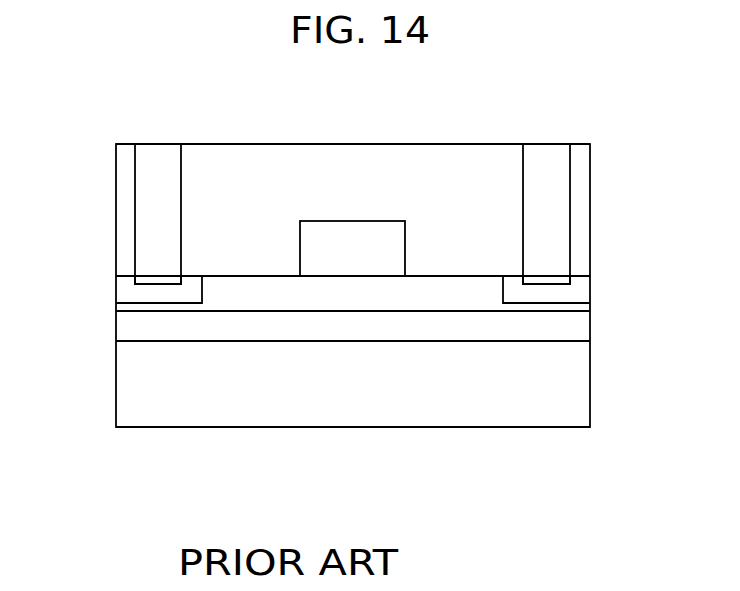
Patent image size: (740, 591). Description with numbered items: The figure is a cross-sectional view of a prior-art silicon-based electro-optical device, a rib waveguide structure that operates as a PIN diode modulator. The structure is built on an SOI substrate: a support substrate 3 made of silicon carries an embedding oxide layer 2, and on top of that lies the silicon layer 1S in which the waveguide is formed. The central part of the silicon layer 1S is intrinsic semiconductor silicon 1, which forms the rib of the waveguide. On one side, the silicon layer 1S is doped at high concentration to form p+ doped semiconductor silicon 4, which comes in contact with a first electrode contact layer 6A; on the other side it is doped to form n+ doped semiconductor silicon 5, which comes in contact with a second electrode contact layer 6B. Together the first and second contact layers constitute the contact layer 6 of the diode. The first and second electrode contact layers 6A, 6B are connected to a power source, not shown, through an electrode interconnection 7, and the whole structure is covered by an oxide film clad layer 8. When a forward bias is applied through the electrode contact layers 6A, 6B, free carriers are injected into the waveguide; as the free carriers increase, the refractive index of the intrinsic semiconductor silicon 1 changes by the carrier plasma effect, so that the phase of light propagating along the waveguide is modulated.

The intrinsic semiconductor silicon 1 is at (330, 265).
The silicon layer 1S is at (480, 297).
The embedding oxide layer 2 is at (565, 323).
The support substrate 3 is at (420, 405).
The p+ doped semiconductor silicon 4 is at (137, 290).
The n+ doped semiconductor silicon 5 is at (573, 295).
The contact layer 6 is at (167, 278).
The first electrode contact layer 6A is at (155, 278).
The second electrode contact layer 6B is at (557, 277).
The electrode interconnection 7 is at (546, 209).
The oxide film clad layer 8 is at (198, 168).